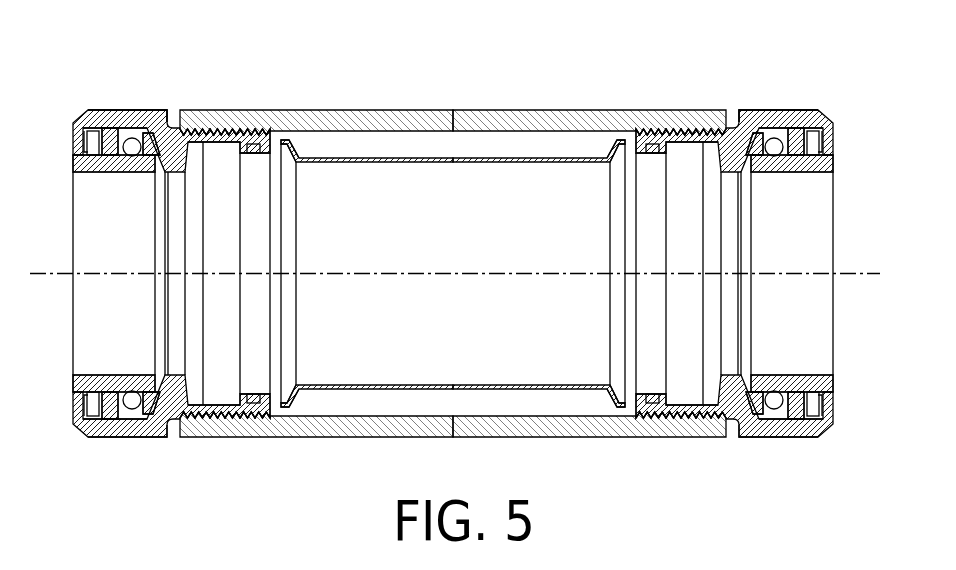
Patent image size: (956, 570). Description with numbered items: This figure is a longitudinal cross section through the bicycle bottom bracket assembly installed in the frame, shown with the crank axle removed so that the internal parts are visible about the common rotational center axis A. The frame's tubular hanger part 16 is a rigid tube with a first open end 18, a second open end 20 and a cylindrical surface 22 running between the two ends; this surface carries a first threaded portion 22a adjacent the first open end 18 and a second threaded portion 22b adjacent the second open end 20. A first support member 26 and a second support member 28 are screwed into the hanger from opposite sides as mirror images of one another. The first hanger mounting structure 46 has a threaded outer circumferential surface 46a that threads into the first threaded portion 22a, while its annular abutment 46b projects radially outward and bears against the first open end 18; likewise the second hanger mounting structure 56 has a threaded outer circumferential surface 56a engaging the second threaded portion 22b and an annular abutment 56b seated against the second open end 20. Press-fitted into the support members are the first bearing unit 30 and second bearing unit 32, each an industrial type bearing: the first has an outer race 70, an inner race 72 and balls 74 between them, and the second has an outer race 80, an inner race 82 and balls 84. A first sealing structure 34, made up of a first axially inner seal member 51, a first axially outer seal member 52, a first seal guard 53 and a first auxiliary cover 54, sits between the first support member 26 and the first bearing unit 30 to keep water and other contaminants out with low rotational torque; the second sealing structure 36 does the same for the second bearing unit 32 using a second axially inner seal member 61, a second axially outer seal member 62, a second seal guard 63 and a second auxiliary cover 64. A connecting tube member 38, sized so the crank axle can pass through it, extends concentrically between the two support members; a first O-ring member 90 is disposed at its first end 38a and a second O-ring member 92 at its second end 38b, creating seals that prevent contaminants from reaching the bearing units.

The tubular hanger part 16 is at (380, 109).
The first open end 18 is at (478, 285).
The second open end 20 is at (478, 285).
The cylindrical surface 22 is at (478, 285).
The first threaded portion 22a is at (227, 122).
The second threaded portion 22b is at (681, 120).
The first support member 26 is at (138, 109).
The second support member 28 is at (770, 108).
The first bearing unit 30 is at (119, 119).
The second bearing unit 32 is at (788, 118).
The first sealing structure 34 is at (478, 285).
The second sealing structure 36 is at (478, 285).
The connecting tube member 38 is at (478, 285).
The first end 38a is at (292, 156).
The second end 38b is at (612, 156).
The first hanger mounting structure 46 is at (179, 276).
The threaded outer circumferential surface 46a is at (214, 148).
The annular abutment 46b is at (182, 117).
The first axially inner seal member 51 is at (170, 176).
The first axially outer seal member 52 is at (122, 170).
The first seal guard 53 is at (81, 174).
The first auxiliary cover 54 is at (70, 147).
The second hanger mounting structure 56 is at (726, 275).
The threaded outer circumferential surface 56a is at (694, 148).
The annular abutment 56b is at (730, 118).
The second axially inner seal member 61 is at (737, 177).
The second axially outer seal member 62 is at (785, 172).
The second seal guard 63 is at (822, 174).
The second auxiliary cover 64 is at (836, 148).
The outer race 70 is at (146, 410).
The inner race 72 is at (118, 385).
The roller elements or balls 74 is at (128, 410).
The outer race 80 is at (760, 412).
The inner race 82 is at (797, 383).
The roller elements or balls 84 is at (780, 410).
The first O-ring member 90 is at (252, 154).
The second O-ring member 92 is at (656, 154).
The rotational center axis A is at (410, 270).